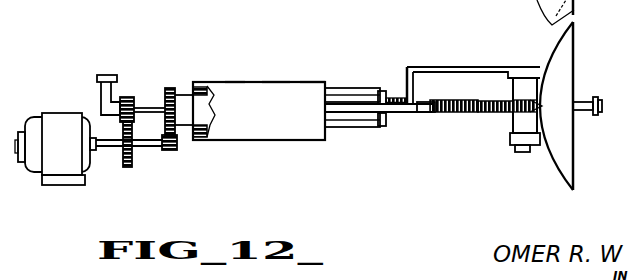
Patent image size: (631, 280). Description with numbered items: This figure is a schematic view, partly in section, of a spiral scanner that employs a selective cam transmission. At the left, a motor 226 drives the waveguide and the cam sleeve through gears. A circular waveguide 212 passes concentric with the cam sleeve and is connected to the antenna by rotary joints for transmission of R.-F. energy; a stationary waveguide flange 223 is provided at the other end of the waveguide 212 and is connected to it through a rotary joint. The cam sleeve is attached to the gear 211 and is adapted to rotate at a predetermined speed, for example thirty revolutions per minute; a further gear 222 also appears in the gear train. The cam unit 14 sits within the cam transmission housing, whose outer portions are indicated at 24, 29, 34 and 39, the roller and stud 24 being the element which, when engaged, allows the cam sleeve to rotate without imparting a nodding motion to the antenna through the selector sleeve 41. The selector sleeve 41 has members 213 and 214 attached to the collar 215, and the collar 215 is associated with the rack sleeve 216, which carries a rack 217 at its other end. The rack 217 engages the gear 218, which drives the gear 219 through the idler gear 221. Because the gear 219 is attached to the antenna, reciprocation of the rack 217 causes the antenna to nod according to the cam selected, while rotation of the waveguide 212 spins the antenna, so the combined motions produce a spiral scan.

The motor 226 is at (57, 120).
The stationary waveguide flange 223 is at (107, 75).
The gear 222 is at (126, 98).
The gear 211 is at (170, 88).
The circular waveguide 212 is at (148, 112).
The roller and stud 24 is at (198, 83).
The cylinder wall 29 is at (235, 82).
The cylinder section 34 is at (275, 82).
The cylinder section 39 is at (313, 82).
The cam unit 14 is at (201, 114).
The selector sleeve 41 is at (270, 134).
The member 214 is at (350, 88).
The member 213 is at (345, 128).
The collar 215 is at (392, 97).
The rack sleeve 216 is at (425, 112).
The rack 217 is at (450, 112).
The idler gear 221 is at (500, 112).
The gear 218 is at (484, 113).
The gear 219 is at (518, 135).